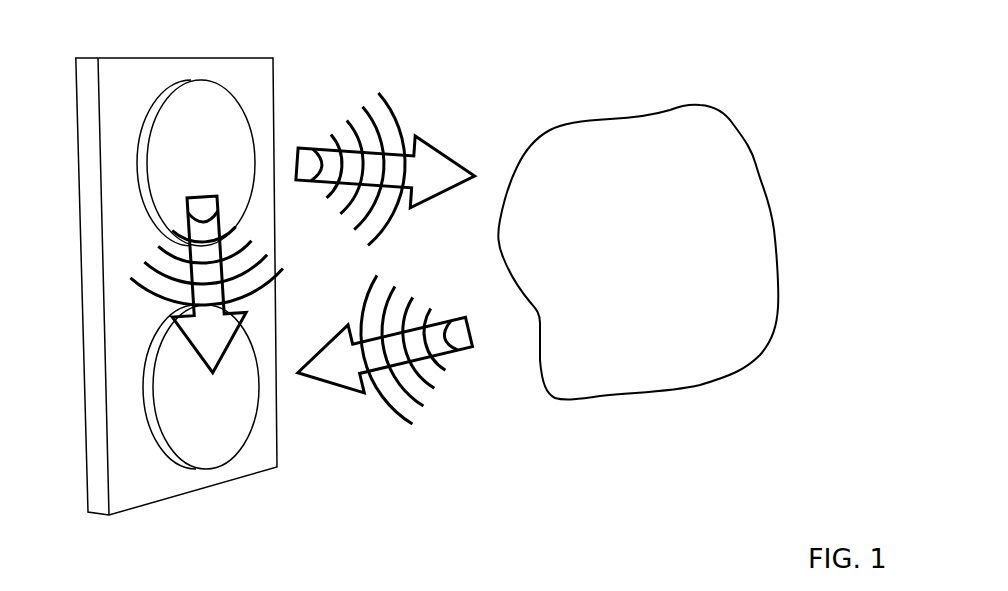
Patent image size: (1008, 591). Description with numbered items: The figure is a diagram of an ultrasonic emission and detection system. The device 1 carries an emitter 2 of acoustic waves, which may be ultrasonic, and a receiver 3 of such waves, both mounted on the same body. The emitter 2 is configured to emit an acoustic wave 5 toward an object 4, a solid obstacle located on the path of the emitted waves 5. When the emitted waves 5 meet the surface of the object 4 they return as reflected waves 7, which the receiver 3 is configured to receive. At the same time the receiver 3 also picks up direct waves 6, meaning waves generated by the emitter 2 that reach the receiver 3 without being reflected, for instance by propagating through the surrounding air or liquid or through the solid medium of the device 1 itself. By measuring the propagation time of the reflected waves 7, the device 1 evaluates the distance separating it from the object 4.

The device 1 is at (325, 34).
The emitter 2 is at (177, 157).
The receiver 3 is at (187, 400).
The object 4 is at (743, 182).
The emitted waves 5 is at (432, 160).
The direct waves 6 is at (203, 270).
The reflected waves 7 is at (350, 377).